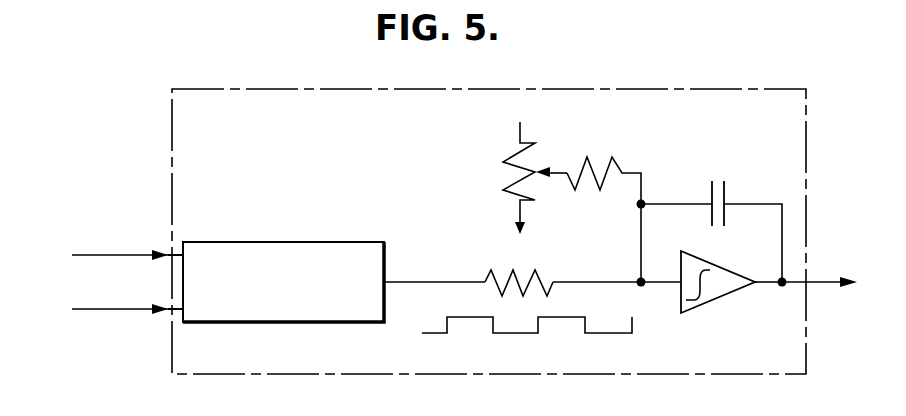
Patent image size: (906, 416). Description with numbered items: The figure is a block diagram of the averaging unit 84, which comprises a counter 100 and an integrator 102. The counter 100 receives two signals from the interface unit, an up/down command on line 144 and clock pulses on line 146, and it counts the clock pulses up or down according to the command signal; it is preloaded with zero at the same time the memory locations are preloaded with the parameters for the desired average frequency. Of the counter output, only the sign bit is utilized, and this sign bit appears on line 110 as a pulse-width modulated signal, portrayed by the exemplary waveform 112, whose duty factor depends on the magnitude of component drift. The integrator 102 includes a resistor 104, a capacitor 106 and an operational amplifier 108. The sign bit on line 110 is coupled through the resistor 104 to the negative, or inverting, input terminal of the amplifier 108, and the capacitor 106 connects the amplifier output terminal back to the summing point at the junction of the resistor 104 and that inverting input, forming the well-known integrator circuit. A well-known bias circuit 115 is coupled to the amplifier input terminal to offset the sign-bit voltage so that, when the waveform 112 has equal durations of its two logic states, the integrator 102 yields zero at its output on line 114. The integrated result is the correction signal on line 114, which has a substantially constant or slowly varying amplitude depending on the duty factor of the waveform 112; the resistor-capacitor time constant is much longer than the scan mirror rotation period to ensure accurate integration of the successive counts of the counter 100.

The averaging unit 84 is at (489, 218).
The counter 100 is at (293, 241).
The line 110 is at (416, 281).
The resistor 104 is at (545, 277).
The bias circuit 115 is at (546, 144).
The capacitor 106 is at (718, 181).
The integrator 102 is at (690, 326).
The operational amplifier 108 is at (727, 297).
The waveform 112 is at (500, 335).
The line 114 is at (821, 281).
The line 144 is at (126, 257).
The line 146 is at (137, 311).